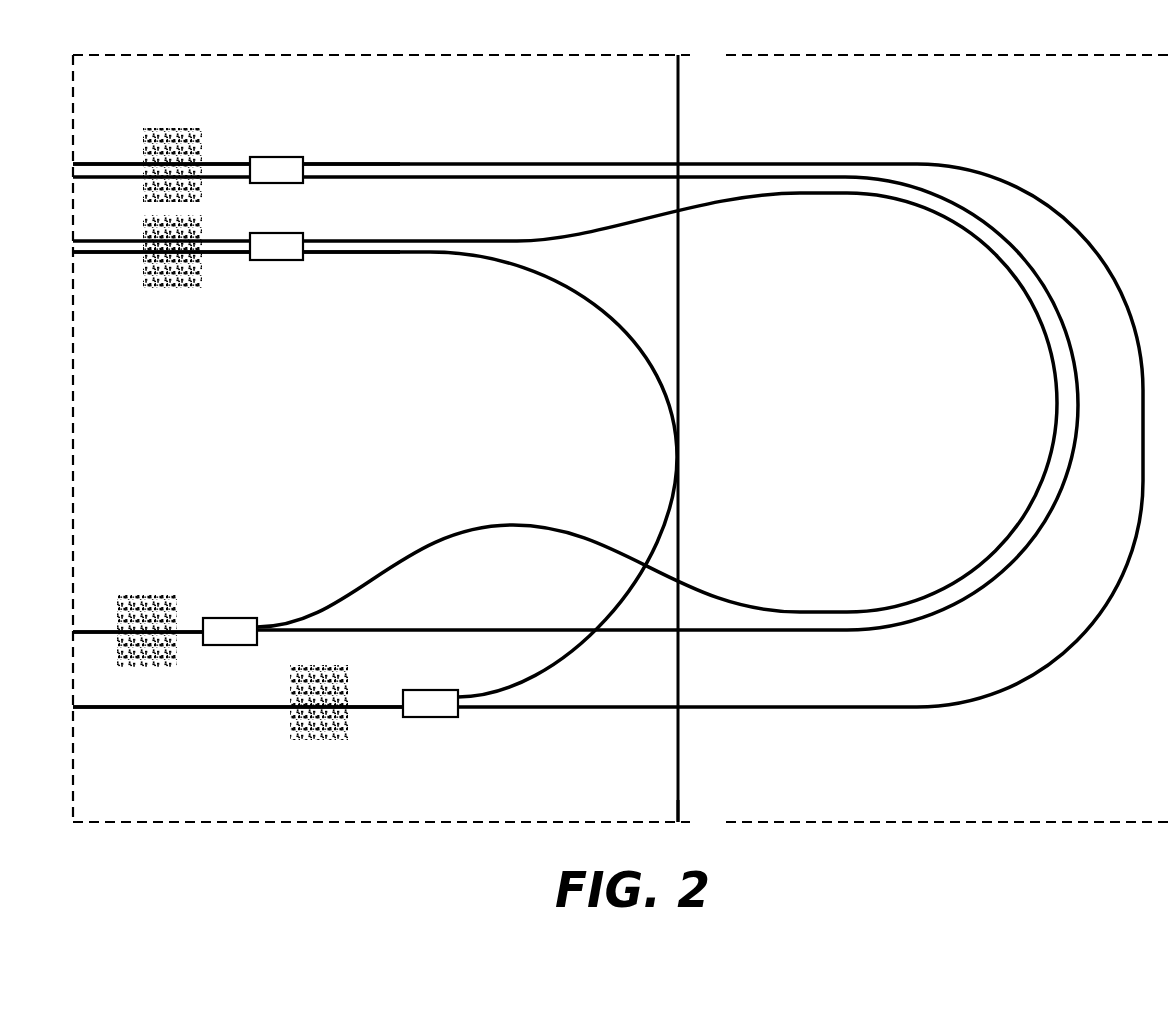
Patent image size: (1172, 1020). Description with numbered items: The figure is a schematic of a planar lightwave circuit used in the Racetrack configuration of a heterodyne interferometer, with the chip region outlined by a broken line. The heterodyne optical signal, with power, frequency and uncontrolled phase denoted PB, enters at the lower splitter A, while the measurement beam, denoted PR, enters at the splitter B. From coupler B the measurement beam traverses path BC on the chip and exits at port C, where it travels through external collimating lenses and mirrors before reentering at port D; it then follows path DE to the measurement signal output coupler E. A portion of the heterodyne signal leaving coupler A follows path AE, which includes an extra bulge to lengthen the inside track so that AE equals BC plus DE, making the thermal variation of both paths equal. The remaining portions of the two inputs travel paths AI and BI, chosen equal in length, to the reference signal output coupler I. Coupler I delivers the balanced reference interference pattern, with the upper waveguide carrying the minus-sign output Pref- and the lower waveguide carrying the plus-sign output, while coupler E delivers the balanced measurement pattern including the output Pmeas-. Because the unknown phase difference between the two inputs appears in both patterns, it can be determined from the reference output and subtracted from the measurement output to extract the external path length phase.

The reference signal output coupler I is at (276, 155).
The measurement signal output coupler E is at (276, 232).
The coupler A is at (230, 615).
The coupler B is at (430, 687).
The port C is at (696, 432).
The port D is at (697, 817).
The reference signal output (minus) Pref- is at (334, 159).
The measurement signal output (minus) Pmeas- is at (228, 256).
The heterodyne signal input PB is at (194, 626).
The measurement beam input PR is at (386, 712).